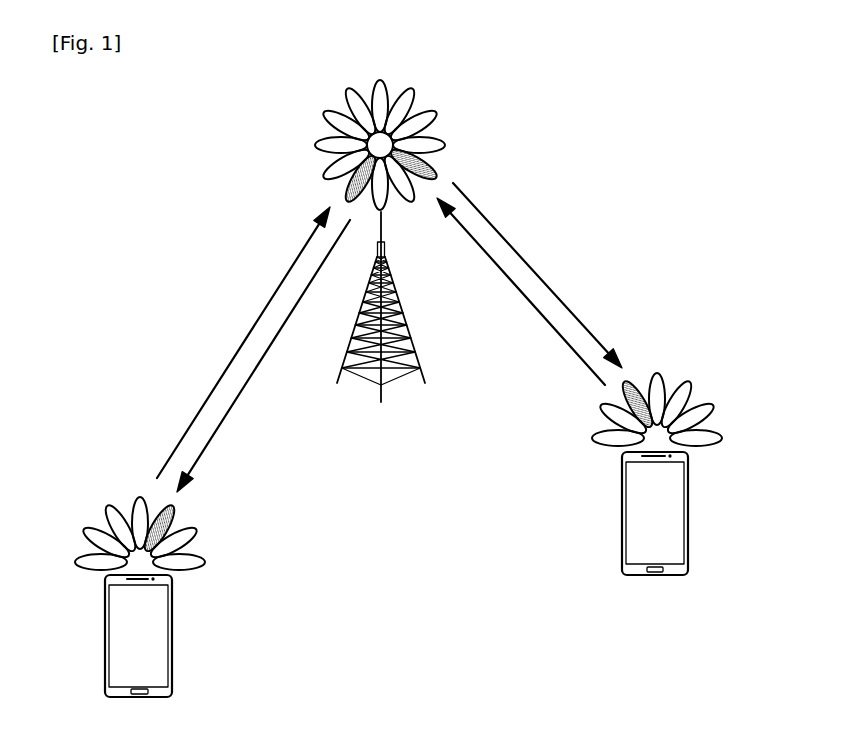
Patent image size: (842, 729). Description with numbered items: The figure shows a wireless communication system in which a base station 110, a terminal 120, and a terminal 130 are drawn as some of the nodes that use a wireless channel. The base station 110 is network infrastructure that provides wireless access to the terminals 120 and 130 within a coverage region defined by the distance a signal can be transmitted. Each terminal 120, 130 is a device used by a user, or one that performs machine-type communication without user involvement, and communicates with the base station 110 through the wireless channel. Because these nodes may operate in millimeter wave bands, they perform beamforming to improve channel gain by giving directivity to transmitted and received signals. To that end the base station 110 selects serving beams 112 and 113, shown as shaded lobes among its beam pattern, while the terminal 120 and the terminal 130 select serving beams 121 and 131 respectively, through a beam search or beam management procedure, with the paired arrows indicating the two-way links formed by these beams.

The base station 110 is at (400, 305).
The serving beam 112 is at (345, 198).
The serving beam 113 is at (439, 172).
The terminal 120 is at (173, 607).
The serving beam 121 is at (173, 510).
The terminal 130 is at (689, 484).
The serving beam 131 is at (625, 394).